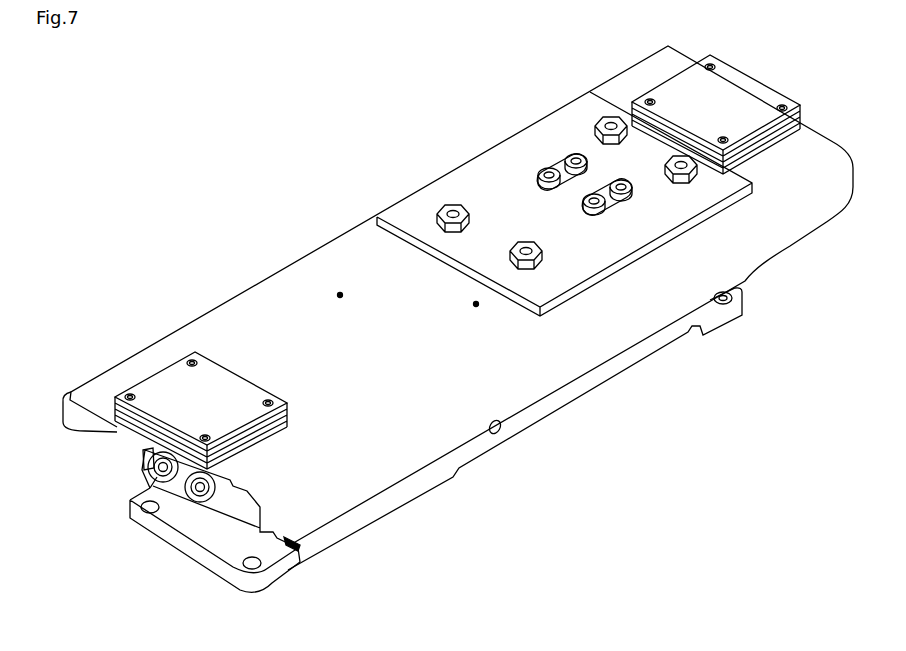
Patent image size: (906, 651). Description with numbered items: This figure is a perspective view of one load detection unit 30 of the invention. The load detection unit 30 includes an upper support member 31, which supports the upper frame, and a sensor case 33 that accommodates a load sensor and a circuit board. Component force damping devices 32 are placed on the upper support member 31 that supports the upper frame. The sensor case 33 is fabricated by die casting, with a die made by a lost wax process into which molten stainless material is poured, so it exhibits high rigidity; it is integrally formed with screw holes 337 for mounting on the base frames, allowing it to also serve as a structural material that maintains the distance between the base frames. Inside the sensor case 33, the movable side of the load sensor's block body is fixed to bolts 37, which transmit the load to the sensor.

The load detection unit 30 is at (263, 83).
The upper support member 31 is at (280, 268).
The component force damping devices 32 is at (740, 71).
The sensor case 33 is at (580, 397).
The bolts 37 is at (575, 156).
The screw holes 337 is at (240, 561).